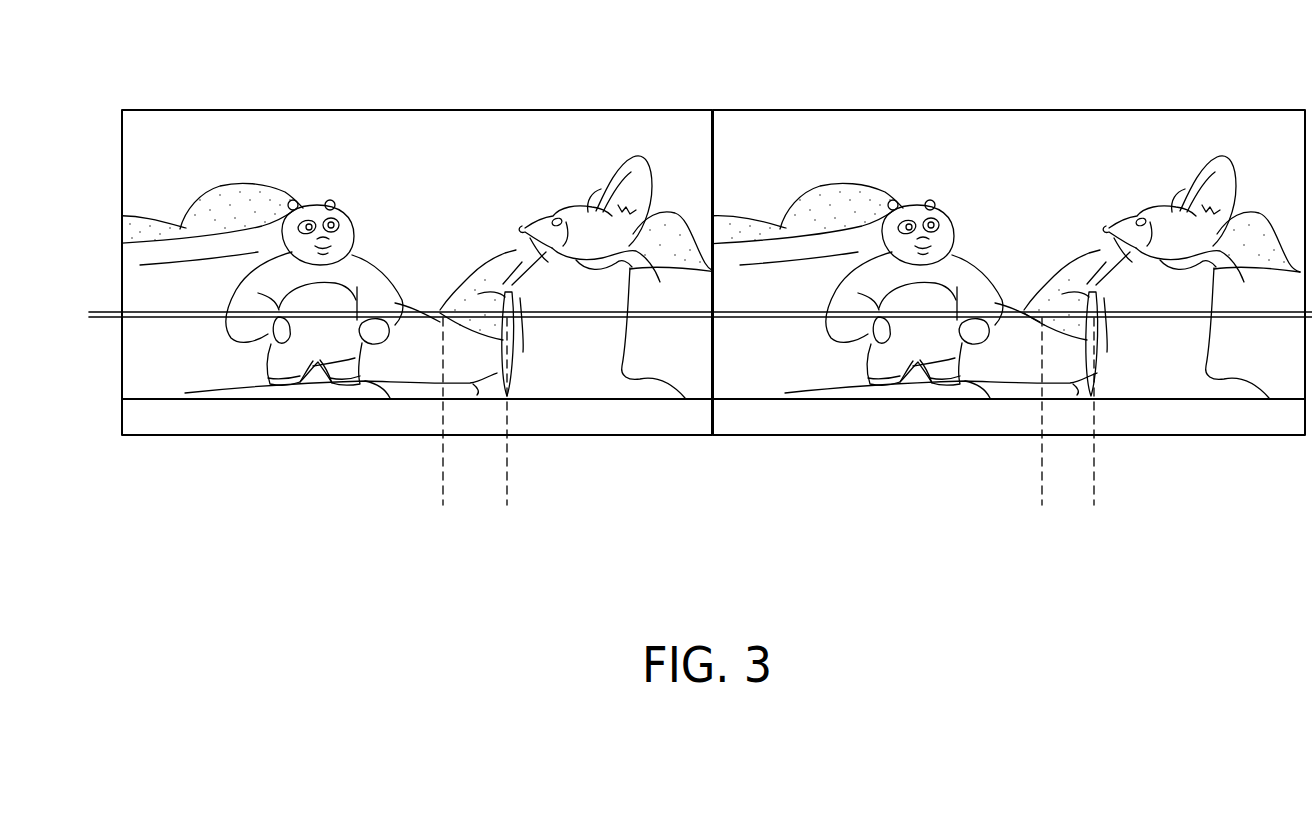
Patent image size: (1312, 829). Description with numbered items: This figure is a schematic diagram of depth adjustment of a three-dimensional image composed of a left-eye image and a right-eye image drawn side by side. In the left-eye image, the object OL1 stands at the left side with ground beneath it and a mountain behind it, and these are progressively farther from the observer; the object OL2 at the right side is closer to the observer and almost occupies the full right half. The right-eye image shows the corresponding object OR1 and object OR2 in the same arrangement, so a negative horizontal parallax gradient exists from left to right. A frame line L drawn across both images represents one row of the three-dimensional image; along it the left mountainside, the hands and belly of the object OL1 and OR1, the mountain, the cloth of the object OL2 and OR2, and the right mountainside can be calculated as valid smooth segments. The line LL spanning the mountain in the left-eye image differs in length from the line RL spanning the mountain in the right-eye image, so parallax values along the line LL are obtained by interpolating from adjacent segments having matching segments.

The object OL1 is at (313, 207).
The object OL2 is at (578, 230).
The object OR1 is at (913, 207).
The object OR2 is at (1162, 230).
The frame line L is at (113, 318).
The line LL is at (507, 500).
The line RL is at (1147, 500).